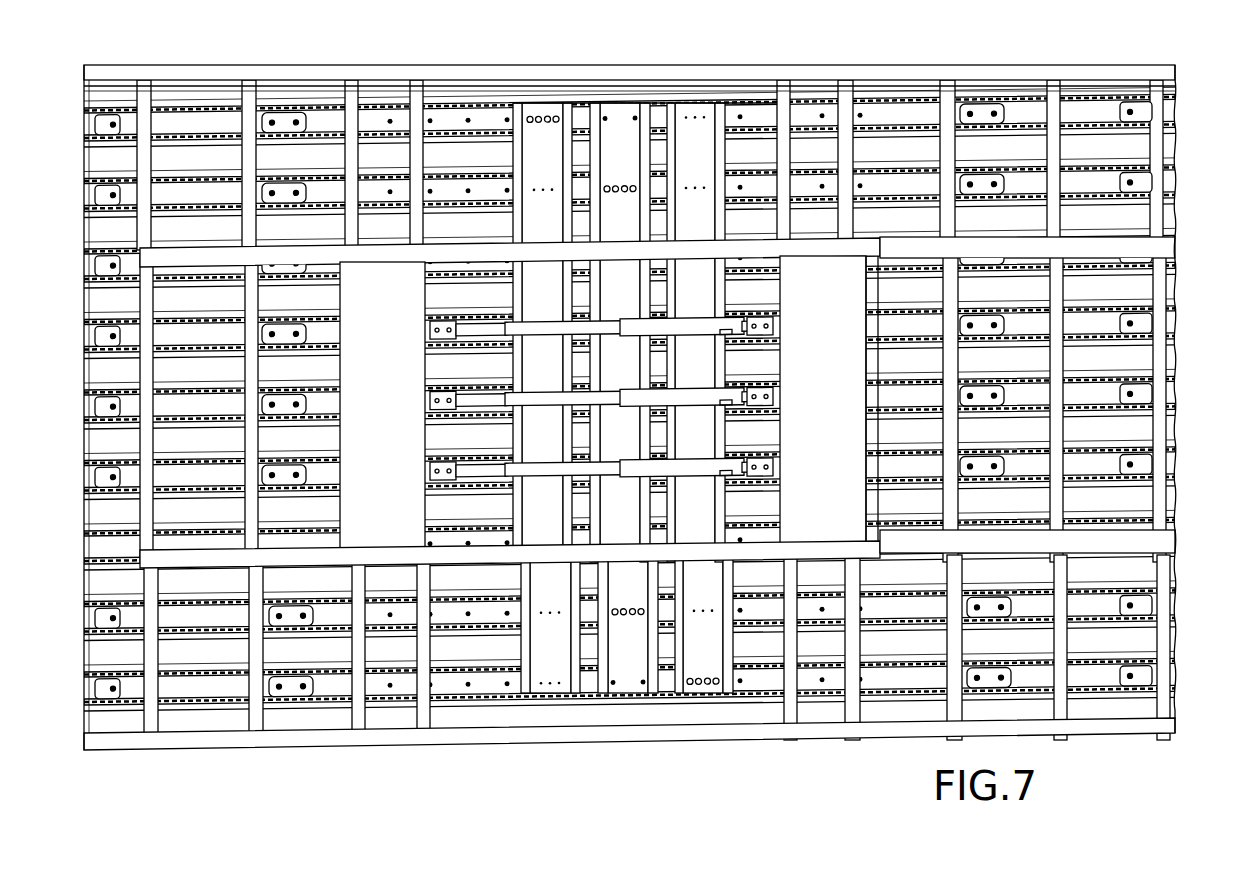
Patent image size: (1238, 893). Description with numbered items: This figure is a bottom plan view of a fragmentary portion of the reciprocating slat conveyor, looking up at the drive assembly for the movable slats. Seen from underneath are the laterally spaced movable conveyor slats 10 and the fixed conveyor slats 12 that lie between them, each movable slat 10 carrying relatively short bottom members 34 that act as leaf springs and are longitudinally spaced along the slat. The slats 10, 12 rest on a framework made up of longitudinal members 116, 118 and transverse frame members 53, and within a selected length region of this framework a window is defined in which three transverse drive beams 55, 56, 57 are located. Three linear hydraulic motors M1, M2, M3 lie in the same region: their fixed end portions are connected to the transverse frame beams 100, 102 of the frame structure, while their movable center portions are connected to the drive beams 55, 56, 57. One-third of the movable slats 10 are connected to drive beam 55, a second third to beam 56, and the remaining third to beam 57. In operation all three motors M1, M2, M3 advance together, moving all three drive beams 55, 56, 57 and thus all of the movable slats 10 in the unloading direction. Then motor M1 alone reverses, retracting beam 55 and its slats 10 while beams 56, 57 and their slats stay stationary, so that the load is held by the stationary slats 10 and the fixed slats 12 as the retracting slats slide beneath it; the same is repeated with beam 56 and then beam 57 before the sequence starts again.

The movable conveyor slat 10 is at (197, 125).
The fixed conveyor slat 12 is at (318, 160).
The bottom member 34 is at (276, 137).
The transverse frame member 53 is at (146, 100).
The first transverse drive beam 55 is at (547, 675).
The second transverse drive beam 56 is at (628, 680).
The third transverse drive beam 57 is at (703, 660).
The transverse frame beam 100 is at (425, 258).
The transverse frame beam 102 is at (839, 382).
The longitudinal frame member 116 is at (832, 548).
The longitudinal frame member 118 is at (830, 246).
The first linear hydraulic drive motor M1 is at (560, 333).
The second linear hydraulic drive motor M2 is at (560, 407).
The third linear hydraulic drive motor M3 is at (558, 477).